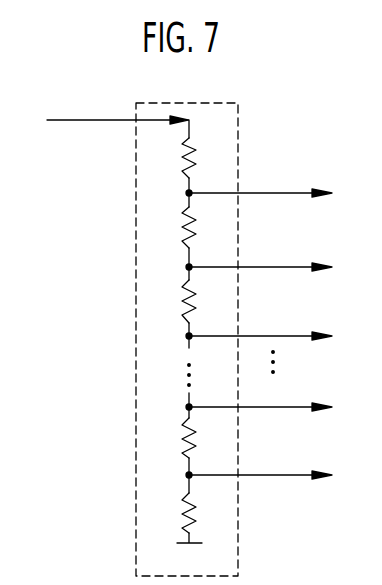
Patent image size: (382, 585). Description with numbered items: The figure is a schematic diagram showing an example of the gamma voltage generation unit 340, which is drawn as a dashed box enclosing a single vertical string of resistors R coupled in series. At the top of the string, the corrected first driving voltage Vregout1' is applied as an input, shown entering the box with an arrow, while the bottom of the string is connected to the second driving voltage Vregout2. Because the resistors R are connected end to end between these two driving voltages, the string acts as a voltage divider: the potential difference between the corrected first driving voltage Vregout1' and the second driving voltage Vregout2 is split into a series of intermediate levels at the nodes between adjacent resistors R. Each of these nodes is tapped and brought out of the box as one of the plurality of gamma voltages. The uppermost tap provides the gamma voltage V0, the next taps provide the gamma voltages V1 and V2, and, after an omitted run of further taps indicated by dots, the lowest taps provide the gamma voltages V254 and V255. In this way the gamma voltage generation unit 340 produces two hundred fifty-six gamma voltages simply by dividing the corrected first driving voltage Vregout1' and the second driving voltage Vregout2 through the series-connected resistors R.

The gamma voltage generation unit 340 is at (190, 102).
The resistor R is at (190, 150).
The corrected first driving voltage Vregout1' is at (118, 115).
The second driving voltage Vregout2 is at (187, 550).
The gamma voltage V0 is at (259, 183).
The gamma voltage V1 is at (259, 257).
The gamma voltage V2 is at (259, 326).
The gamma voltage V254 is at (259, 397).
The gamma voltage V255 is at (259, 464).